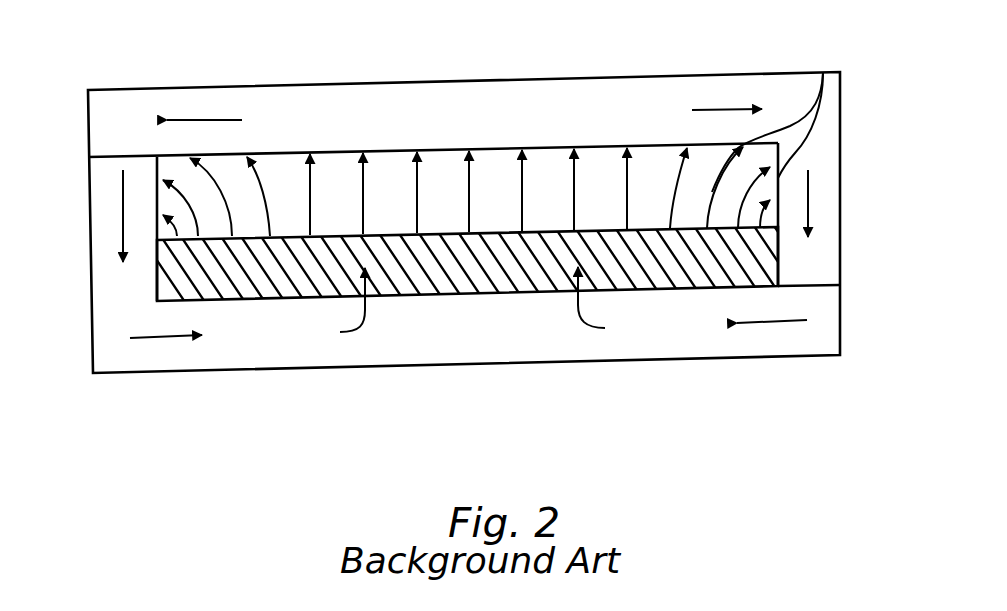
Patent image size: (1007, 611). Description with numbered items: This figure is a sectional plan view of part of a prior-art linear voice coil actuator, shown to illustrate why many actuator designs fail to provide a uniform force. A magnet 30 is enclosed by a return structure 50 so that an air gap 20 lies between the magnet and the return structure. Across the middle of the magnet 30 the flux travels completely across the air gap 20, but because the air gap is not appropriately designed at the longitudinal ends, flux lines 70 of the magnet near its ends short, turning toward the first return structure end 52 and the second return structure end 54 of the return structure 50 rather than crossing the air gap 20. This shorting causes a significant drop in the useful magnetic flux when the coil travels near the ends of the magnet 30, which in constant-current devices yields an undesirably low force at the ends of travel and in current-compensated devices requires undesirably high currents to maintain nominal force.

The air gap 20 is at (497, 170).
The magnet 30 is at (447, 280).
The return structure 50 is at (657, 78).
The first return structure end 52 is at (102, 182).
The second return structure end 54 is at (818, 153).
The flux lines 70 is at (823, 73).